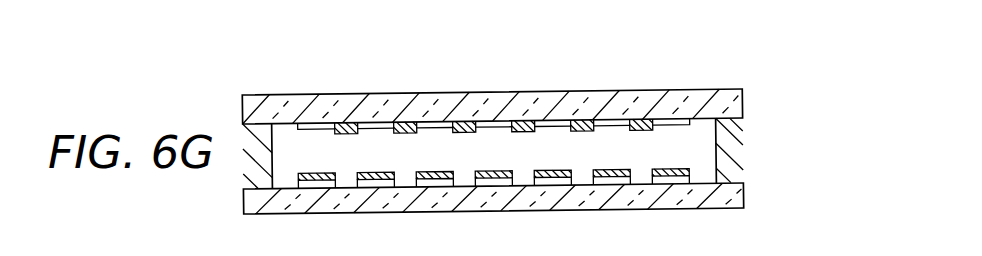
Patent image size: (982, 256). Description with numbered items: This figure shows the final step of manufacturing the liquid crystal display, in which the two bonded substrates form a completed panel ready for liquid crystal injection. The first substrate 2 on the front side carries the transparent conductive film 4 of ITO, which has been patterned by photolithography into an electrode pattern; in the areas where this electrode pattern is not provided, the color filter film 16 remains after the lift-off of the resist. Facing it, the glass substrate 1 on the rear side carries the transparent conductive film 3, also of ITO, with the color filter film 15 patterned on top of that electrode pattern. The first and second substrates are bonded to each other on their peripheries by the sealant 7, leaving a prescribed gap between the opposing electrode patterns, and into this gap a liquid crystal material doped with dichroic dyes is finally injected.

The glass substrate 1 is at (730, 196).
The first substrate 2 is at (731, 111).
The transparent conductive film 3 is at (692, 180).
The transparent conductive film 4 is at (690, 125).
The sealant 7 is at (728, 150).
The color filter film 15 is at (690, 174).
The color filter film 16 is at (653, 125).